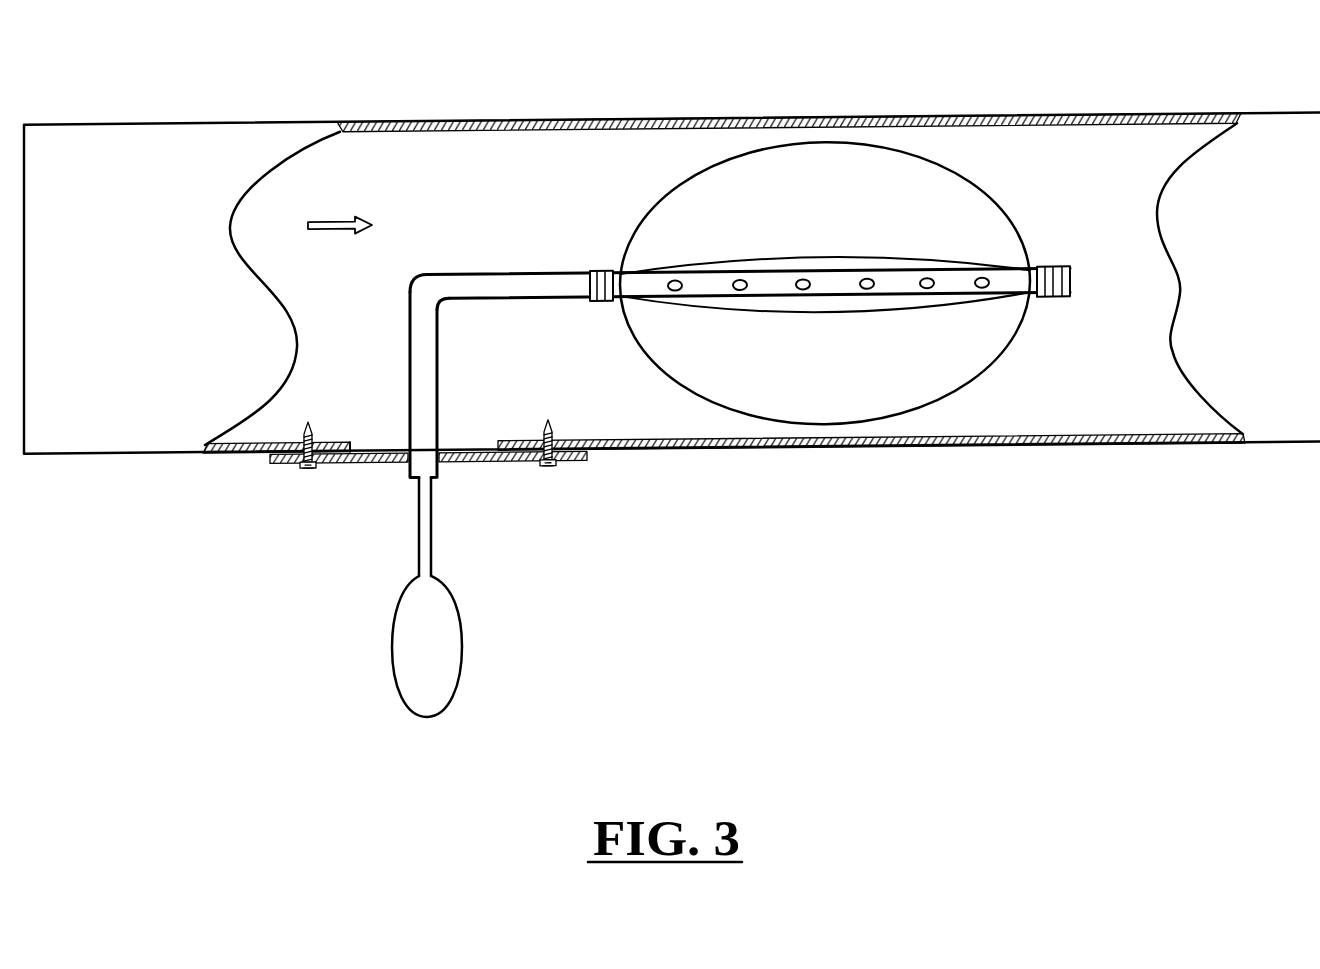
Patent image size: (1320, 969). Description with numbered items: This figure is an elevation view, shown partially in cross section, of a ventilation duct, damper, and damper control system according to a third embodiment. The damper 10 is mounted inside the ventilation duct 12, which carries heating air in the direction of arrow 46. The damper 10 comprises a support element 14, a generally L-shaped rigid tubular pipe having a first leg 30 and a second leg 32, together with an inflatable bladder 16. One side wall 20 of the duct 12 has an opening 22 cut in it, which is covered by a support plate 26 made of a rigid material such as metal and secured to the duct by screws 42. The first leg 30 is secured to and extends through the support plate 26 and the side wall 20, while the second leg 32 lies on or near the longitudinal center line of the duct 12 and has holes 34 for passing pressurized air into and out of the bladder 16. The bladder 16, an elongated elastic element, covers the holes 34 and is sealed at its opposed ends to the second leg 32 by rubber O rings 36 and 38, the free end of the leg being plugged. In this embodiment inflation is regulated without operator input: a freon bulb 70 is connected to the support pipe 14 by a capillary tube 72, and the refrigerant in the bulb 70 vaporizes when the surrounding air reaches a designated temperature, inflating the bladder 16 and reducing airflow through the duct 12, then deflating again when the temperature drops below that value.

The damper 10 is at (558, 183).
The ventilation duct 12 is at (932, 120).
The support element 14 is at (423, 302).
The inflatable bladder 16 is at (722, 269).
The side wall 20 is at (220, 453).
The opening 22 is at (348, 447).
The support plate 26 is at (485, 466).
The first leg 30 is at (408, 361).
The second leg 32 is at (497, 277).
The holes 34 is at (1000, 310).
The rubber O ring 36 is at (600, 309).
The rubber O ring 38 is at (1053, 278).
The screws 42 is at (305, 473).
The arrow 46 is at (332, 218).
The freon bulb 70 is at (393, 636).
The capillary tube 72 is at (418, 494).